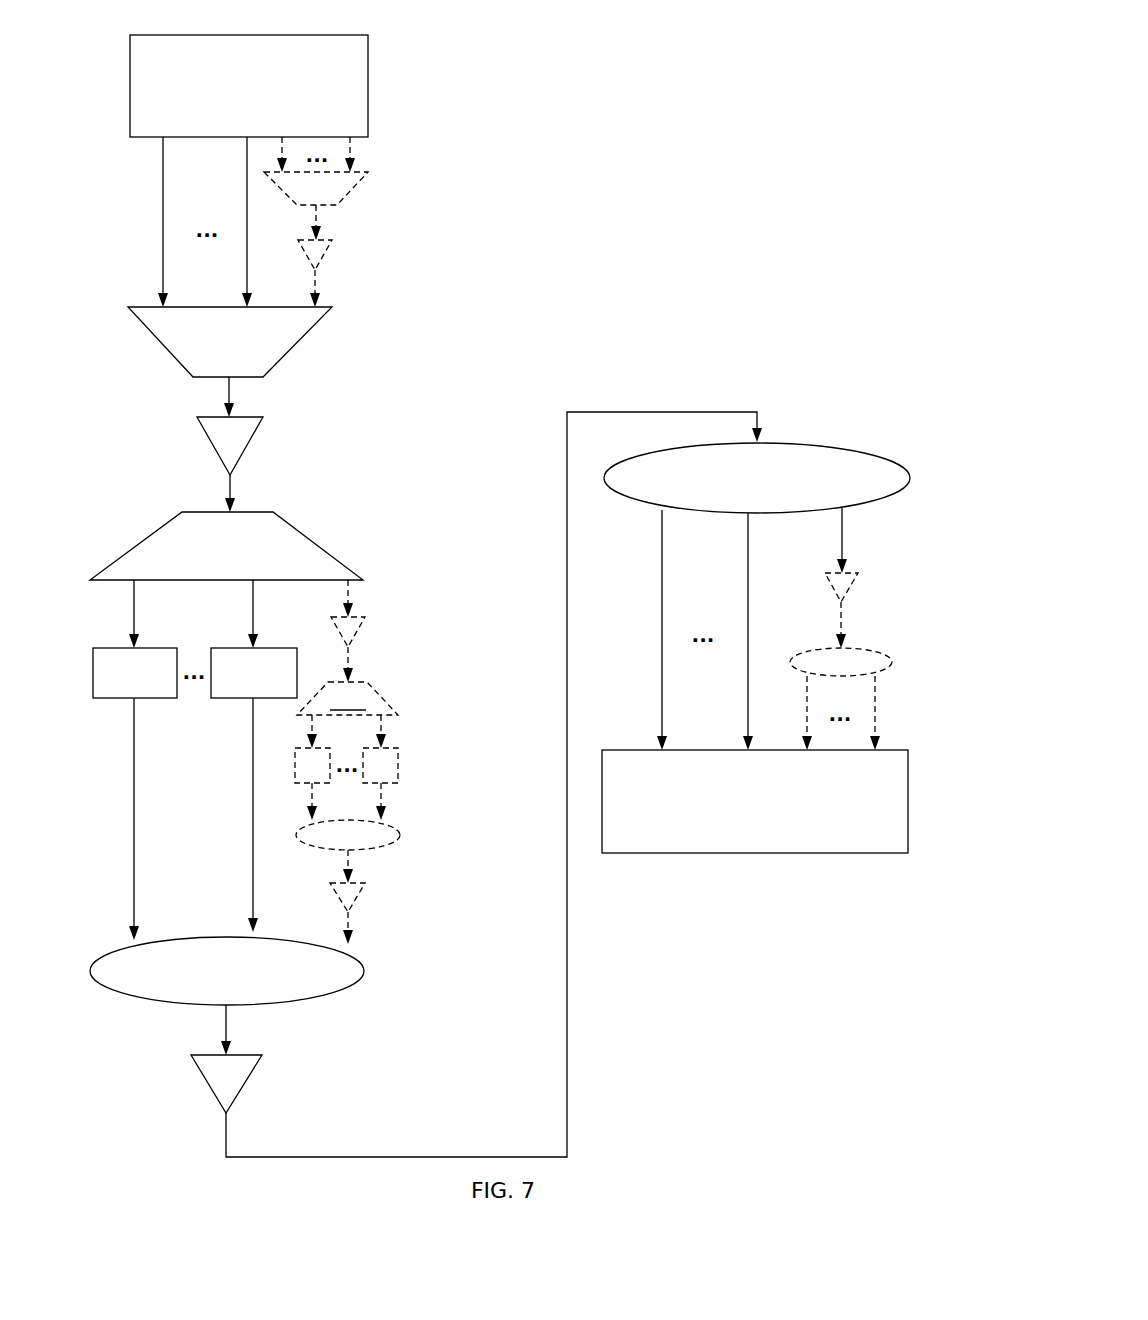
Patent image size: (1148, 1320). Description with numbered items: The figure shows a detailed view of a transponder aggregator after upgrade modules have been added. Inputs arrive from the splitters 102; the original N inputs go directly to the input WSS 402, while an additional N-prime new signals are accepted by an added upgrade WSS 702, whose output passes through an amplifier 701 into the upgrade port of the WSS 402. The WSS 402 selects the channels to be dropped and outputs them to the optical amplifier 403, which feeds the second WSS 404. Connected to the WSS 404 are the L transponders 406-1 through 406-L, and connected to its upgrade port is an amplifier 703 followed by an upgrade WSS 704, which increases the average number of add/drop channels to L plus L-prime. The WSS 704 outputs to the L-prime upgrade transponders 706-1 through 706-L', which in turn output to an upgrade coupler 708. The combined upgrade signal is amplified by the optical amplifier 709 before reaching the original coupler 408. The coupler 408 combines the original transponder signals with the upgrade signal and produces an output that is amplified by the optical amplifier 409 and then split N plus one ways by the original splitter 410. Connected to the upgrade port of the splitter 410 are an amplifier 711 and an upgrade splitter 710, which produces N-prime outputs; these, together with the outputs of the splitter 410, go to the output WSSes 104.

The splitters 102 is at (230, 111).
The output WSSes 104 is at (737, 826).
The (N+1)×1 WSS 402 is at (211, 367).
The optical amplifier 403 is at (212, 449).
The 1×(L+1) WSS 404 is at (210, 571).
The transponder 406-1 is at (107, 684).
The transponder 406-L is at (226, 684).
The coupler 408 is at (209, 996).
The optical amplifier 409 is at (208, 1087).
The splitter 410 is at (739, 503).
The amplifier 701 is at (335, 257).
The N'×1 WSS 702 is at (298, 201).
The amplifier 703 is at (371, 621).
The 1×L' WSS 704 is at (391, 692).
The upgrade transponder 706-1 is at (292, 764).
The upgrade transponder 706-L' is at (430, 756).
The upgrade coupler 708 is at (330, 845).
The optical amplifier 709 is at (367, 898).
The upgrade splitter 710 is at (823, 672).
The amplifier 711 is at (864, 572).